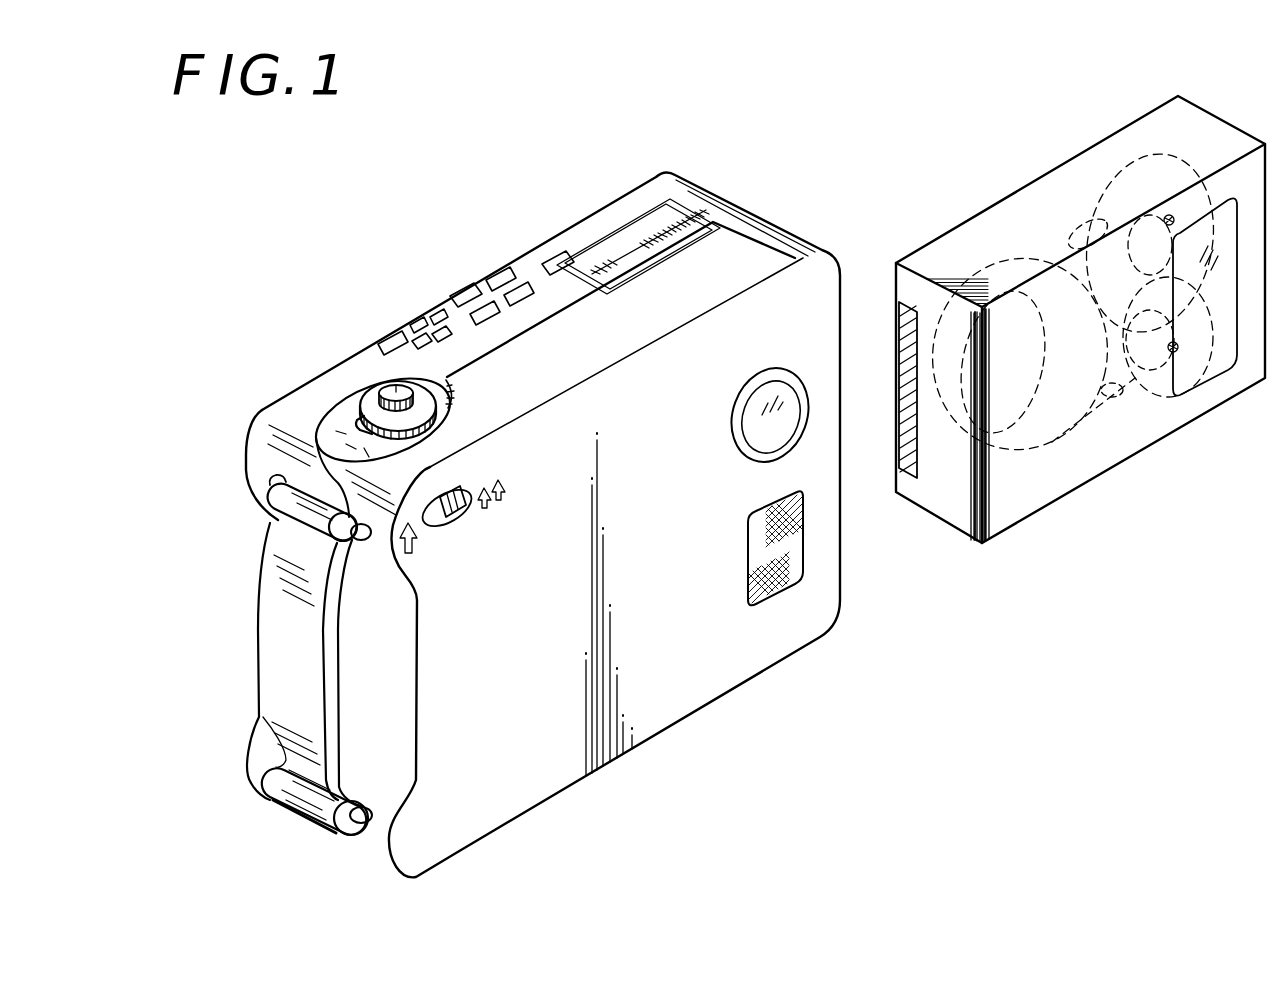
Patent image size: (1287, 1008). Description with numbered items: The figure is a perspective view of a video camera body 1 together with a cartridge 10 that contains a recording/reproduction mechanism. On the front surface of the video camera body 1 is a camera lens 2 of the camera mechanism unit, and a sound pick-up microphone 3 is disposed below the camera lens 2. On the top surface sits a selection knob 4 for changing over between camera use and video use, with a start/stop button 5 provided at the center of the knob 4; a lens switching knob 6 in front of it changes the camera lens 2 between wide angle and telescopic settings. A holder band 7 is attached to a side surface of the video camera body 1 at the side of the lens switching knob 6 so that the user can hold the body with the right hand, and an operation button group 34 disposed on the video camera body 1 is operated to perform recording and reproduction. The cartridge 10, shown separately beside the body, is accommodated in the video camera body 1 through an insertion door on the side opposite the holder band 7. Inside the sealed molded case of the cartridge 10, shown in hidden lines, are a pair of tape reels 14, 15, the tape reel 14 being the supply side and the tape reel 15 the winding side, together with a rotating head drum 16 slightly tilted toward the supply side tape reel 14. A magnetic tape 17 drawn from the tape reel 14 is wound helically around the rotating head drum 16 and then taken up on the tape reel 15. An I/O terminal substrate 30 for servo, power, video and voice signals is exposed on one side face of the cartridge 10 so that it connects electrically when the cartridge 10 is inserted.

The video camera body 1 is at (497, 262).
The camera lens 2 is at (750, 437).
The sound pick-up microphone 3 is at (762, 567).
The selection knob 4 is at (370, 402).
The start/stop button 5 is at (397, 388).
The lens switching knob 6 is at (455, 522).
The holder band 7 is at (270, 668).
The operation button group 34 is at (469, 310).
The cartridge 10 is at (1050, 170).
The tape reel 14 is at (1148, 232).
The tape reel 15 is at (1160, 398).
The rotating head drum 16 is at (1060, 438).
The magnetic tape 17 is at (1050, 249).
The I/O terminal substrate 30 is at (897, 340).